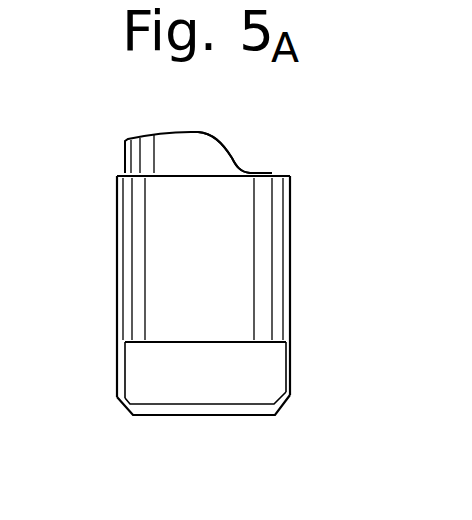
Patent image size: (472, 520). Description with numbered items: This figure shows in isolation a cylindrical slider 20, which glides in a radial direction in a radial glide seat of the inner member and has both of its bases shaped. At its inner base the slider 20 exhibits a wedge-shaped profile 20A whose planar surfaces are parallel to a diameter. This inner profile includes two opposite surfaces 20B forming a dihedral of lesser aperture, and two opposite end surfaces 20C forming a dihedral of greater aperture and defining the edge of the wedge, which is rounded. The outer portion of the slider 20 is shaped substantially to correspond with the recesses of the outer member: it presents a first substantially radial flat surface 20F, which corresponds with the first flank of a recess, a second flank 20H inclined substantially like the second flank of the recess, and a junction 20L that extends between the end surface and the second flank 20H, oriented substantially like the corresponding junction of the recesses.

The slider 20 is at (272, 292).
The wedge-shaped profile 20A is at (248, 427).
The opposite surfaces 20B is at (158, 370).
The opposite end surfaces 20C is at (167, 407).
The first substantially radial flat surface 20F is at (125, 162).
The junction 20L is at (213, 133).
The second flank 20H is at (235, 157).